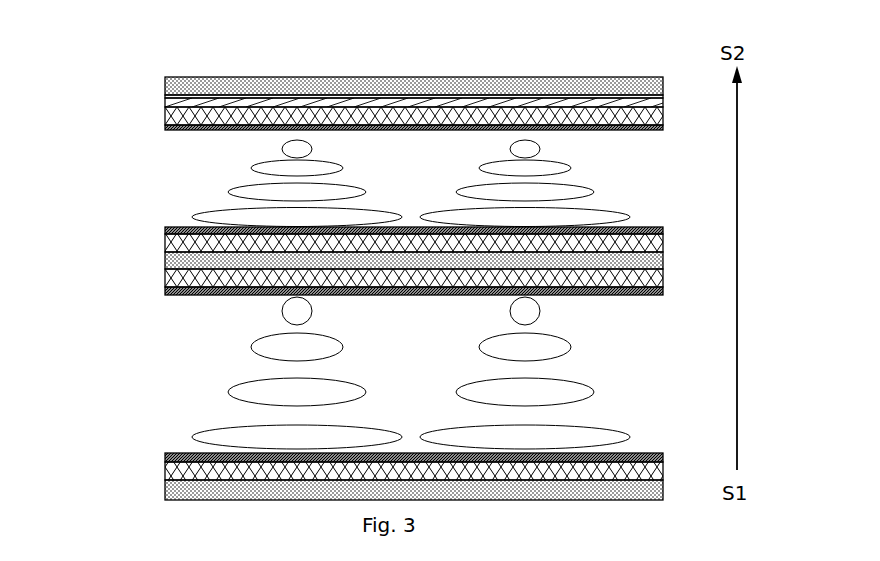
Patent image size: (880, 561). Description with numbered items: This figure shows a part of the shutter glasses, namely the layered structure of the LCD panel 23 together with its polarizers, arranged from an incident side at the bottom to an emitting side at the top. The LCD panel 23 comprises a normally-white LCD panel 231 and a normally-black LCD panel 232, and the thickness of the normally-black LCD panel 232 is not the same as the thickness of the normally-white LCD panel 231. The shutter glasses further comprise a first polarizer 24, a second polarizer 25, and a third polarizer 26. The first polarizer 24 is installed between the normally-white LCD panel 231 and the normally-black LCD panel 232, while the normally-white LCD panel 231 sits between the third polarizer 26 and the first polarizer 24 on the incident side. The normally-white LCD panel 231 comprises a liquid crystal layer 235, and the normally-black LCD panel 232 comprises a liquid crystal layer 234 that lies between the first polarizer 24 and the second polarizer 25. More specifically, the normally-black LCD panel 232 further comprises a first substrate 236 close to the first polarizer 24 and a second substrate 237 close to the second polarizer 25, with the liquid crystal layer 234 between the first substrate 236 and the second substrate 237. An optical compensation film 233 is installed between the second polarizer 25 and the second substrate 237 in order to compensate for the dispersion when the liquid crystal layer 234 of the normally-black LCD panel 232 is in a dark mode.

The LCD panel 23 is at (102, 119).
The first polarizer 24 is at (416, 247).
The second polarizer 25 is at (225, 85).
The third polarizer 26 is at (655, 492).
The normally-white LCD panel 231 is at (394, 373).
The normally-black LCD panel 232 is at (394, 170).
The optical compensation film 233 is at (657, 101).
The liquid crystal layer 234 is at (574, 168).
The liquid crystal layer 235 is at (574, 340).
The first substrate 236 is at (662, 244).
The second substrate 237 is at (661, 115).